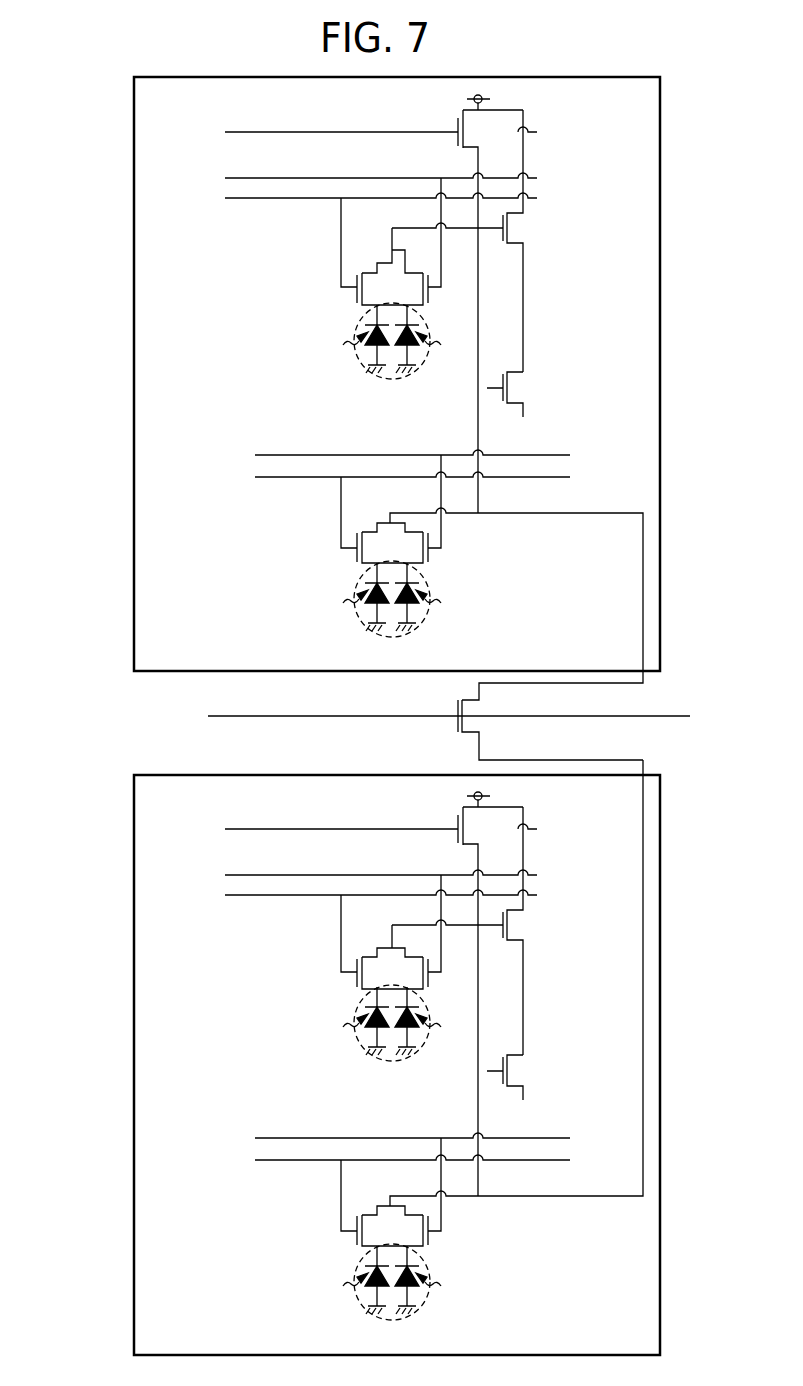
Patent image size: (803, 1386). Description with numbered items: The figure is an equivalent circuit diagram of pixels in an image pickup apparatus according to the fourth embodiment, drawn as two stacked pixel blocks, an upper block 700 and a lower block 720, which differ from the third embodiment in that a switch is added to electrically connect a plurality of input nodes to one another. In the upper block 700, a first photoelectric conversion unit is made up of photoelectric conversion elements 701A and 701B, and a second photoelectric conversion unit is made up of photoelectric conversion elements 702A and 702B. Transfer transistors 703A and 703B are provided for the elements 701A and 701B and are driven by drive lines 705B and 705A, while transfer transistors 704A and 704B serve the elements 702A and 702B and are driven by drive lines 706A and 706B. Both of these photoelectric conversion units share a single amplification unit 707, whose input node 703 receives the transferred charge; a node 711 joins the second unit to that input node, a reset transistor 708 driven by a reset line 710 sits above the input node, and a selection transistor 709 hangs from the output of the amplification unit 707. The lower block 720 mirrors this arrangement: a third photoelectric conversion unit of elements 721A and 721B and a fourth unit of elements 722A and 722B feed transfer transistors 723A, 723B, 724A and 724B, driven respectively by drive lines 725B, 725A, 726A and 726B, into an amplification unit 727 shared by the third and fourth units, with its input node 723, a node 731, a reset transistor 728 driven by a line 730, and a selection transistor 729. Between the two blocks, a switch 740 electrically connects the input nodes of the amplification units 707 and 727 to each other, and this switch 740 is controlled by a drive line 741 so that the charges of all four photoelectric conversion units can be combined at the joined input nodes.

The first pixel unit 700 is at (134, 240).
The reset control line 710 is at (355, 132).
The drive line 705A is at (322, 198).
The drive line 705B is at (460, 178).
The reset transistor 708 is at (473, 125).
The floating diffusion node 703 is at (422, 228).
The amplification unit 707 is at (510, 228).
The transfer transistor 703A is at (345, 285).
The transfer transistor 703B is at (430, 276).
The photoelectric conversion element 701A is at (366, 350).
The photoelectric conversion element 701B is at (418, 350).
The selection transistor 709 is at (510, 388).
The drive line 706A is at (348, 477).
The drive line 706B is at (452, 455).
The connection node 711 is at (413, 513).
The transfer transistor 704A is at (352, 540).
The transfer transistor 704B is at (430, 537).
The photoelectric conversion element 702A is at (366, 612).
The photoelectric conversion element 702B is at (418, 612).
The switch 740 is at (460, 700).
The drive line 741 is at (238, 716).
The second pixel unit 720 is at (134, 937).
The reset control line 730 is at (355, 829).
The drive line 725A is at (322, 895).
The drive line 725B is at (460, 875).
The reset transistor 728 is at (473, 822).
The floating diffusion node 723 is at (422, 925).
The amplification unit 727 is at (510, 925).
The transfer transistor 723A is at (350, 966).
The transfer transistor 723B is at (430, 962).
The photoelectric conversion element 721A is at (366, 1033).
The photoelectric conversion element 721B is at (418, 1033).
The selection transistor 729 is at (510, 1071).
The drive line 726A is at (348, 1160).
The drive line 726B is at (452, 1138).
The connection node 731 is at (413, 1196).
The transfer transistor 724A is at (352, 1223).
The transfer transistor 724B is at (430, 1220).
The photoelectric conversion element 722A is at (366, 1295).
The photoelectric conversion element 722B is at (418, 1295).